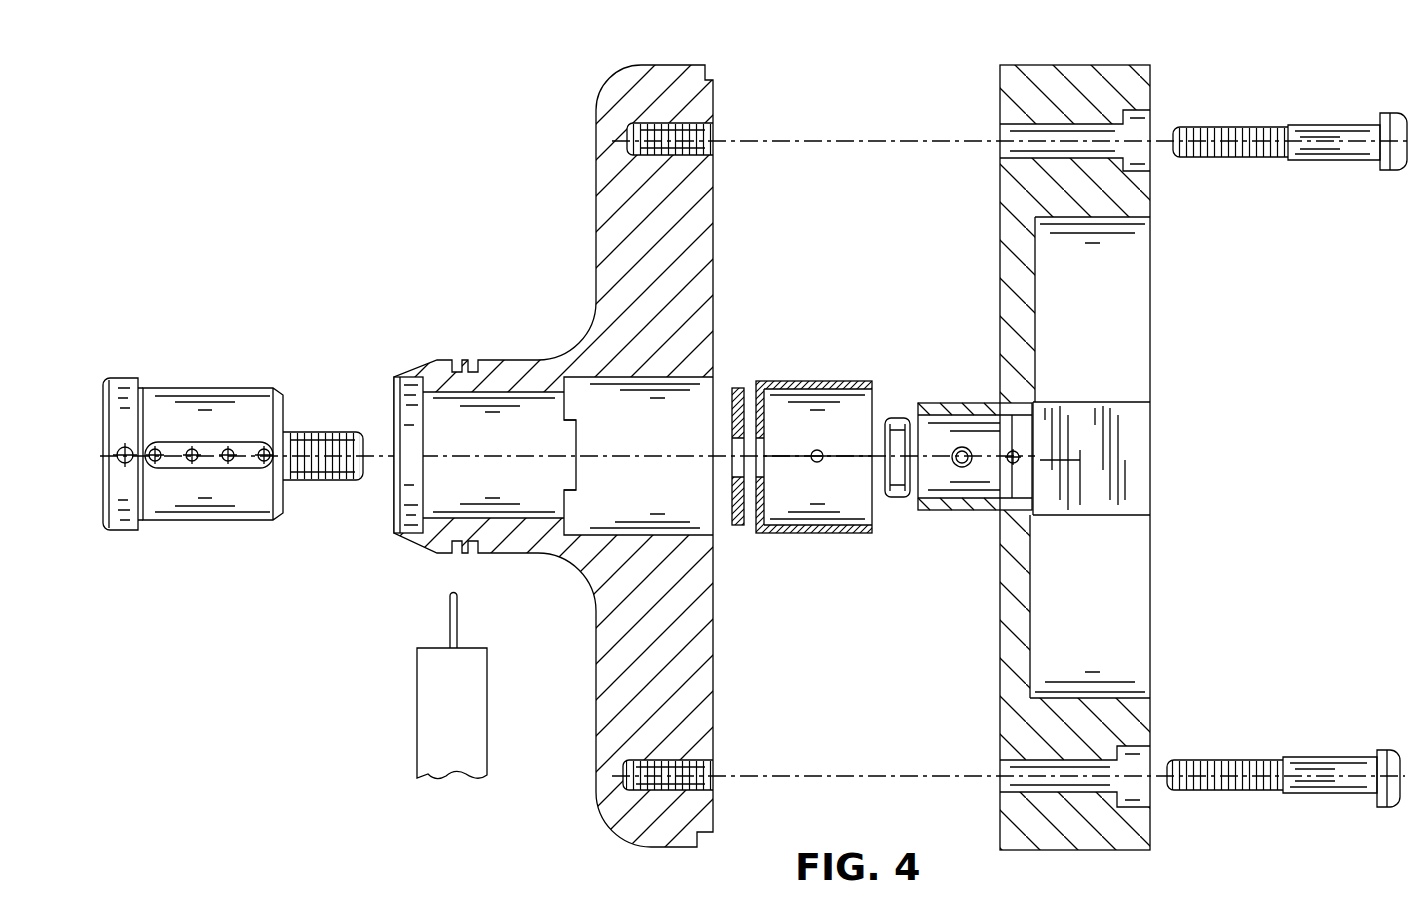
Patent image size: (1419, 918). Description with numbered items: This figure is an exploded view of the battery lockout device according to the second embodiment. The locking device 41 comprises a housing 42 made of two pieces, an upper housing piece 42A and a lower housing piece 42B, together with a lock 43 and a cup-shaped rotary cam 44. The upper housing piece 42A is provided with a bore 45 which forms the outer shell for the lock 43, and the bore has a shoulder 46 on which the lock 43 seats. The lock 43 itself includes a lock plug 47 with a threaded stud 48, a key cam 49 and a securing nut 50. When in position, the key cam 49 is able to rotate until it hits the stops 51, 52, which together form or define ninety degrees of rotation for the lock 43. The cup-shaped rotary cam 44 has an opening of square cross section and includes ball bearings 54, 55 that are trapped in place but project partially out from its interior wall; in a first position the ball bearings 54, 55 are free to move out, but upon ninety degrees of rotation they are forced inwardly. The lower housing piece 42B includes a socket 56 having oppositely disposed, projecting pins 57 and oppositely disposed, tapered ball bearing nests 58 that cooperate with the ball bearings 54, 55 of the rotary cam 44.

The locking device 41 is at (572, 183).
The housing 42 is at (1165, 62).
The upper housing piece 42A is at (632, 822).
The lower housing piece 42B is at (1127, 832).
The lock 43 is at (288, 386).
The cup-shaped rotary cam 44 is at (768, 528).
The bore 45 is at (508, 516).
The shoulder 46 is at (415, 400).
The lock plug 47 is at (207, 403).
The threaded stud 48 is at (330, 482).
The key cam 49 is at (735, 527).
The securing nut 50 is at (898, 497).
The stop 51 is at (576, 420).
The stop 52 is at (576, 492).
The ball bearing 54 is at (837, 512).
The ball bearing 55 is at (818, 463).
The socket 56 is at (937, 510).
The projecting pin 57 is at (1008, 450).
The tapered ball bearing nest 58 is at (953, 449).